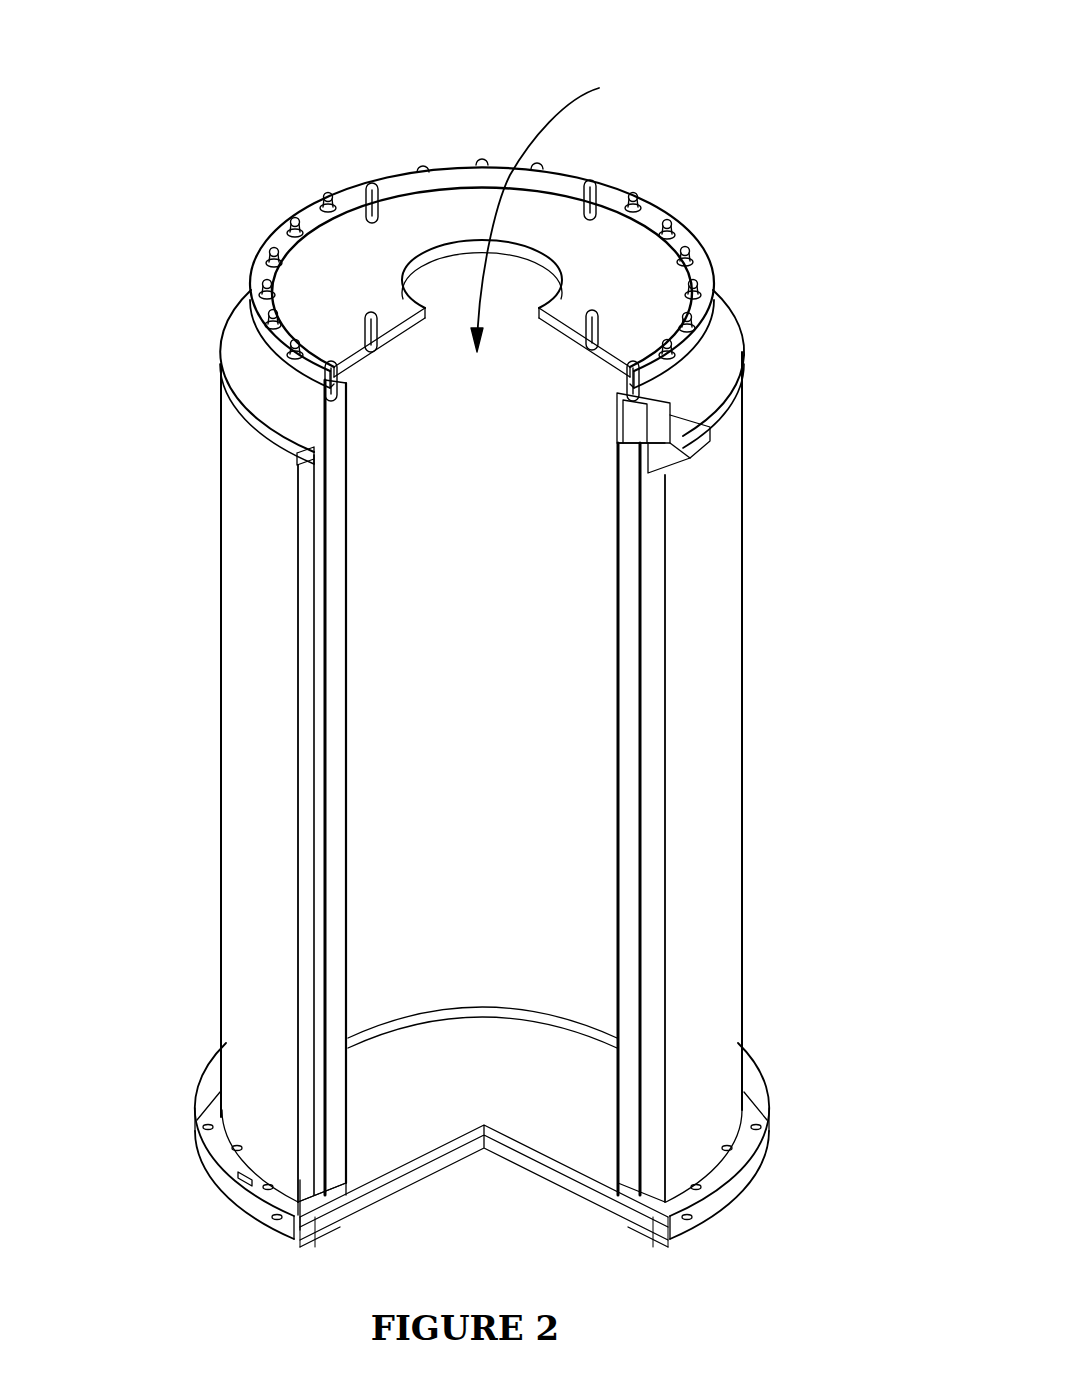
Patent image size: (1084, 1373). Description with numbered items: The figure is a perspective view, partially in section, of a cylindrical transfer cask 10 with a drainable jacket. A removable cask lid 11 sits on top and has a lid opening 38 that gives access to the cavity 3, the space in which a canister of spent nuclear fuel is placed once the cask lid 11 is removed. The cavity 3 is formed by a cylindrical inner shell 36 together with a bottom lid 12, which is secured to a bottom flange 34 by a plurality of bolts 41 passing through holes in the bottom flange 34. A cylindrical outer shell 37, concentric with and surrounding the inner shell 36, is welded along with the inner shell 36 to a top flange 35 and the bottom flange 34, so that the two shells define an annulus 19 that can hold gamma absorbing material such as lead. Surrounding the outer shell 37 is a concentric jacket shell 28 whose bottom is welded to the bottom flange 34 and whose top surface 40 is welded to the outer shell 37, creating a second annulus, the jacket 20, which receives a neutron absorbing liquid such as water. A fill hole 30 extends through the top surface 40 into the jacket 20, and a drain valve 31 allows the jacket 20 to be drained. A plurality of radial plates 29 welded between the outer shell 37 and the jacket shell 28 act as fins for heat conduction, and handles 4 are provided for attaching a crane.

The transfer cask 10 is at (740, 127).
The cavity 3 is at (547, 214).
The cask lid 11 is at (333, 270).
The lid opening 38 is at (560, 267).
The top flange 35 is at (260, 303).
The fill hole 30 is at (273, 423).
The top surface 40 is at (725, 340).
The handles 4 is at (700, 420).
The jacket shell 28 is at (668, 598).
The inner shell 36 is at (622, 757).
The annulus 19 is at (632, 827).
The jacket 20 is at (655, 922).
The radial plates 29 is at (307, 778).
The outer shell 37 is at (320, 860).
The bottom lid 12 is at (600, 1147).
The bolts 41 is at (748, 1118).
The drain valve 31 is at (197, 1138).
The bottom flange 34 is at (748, 1160).